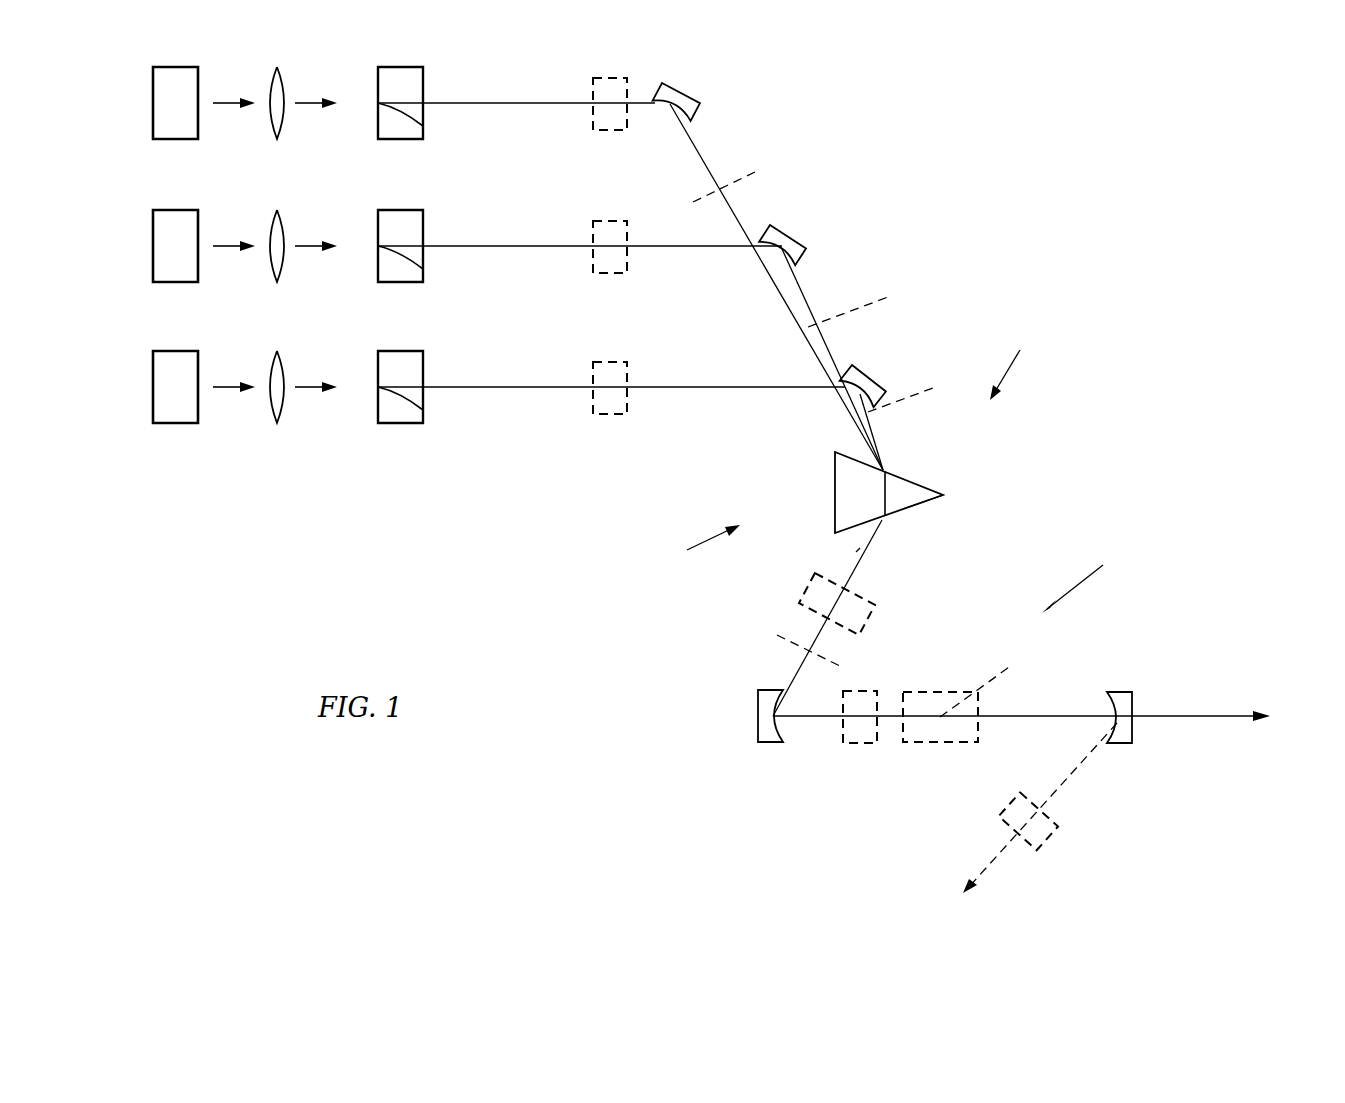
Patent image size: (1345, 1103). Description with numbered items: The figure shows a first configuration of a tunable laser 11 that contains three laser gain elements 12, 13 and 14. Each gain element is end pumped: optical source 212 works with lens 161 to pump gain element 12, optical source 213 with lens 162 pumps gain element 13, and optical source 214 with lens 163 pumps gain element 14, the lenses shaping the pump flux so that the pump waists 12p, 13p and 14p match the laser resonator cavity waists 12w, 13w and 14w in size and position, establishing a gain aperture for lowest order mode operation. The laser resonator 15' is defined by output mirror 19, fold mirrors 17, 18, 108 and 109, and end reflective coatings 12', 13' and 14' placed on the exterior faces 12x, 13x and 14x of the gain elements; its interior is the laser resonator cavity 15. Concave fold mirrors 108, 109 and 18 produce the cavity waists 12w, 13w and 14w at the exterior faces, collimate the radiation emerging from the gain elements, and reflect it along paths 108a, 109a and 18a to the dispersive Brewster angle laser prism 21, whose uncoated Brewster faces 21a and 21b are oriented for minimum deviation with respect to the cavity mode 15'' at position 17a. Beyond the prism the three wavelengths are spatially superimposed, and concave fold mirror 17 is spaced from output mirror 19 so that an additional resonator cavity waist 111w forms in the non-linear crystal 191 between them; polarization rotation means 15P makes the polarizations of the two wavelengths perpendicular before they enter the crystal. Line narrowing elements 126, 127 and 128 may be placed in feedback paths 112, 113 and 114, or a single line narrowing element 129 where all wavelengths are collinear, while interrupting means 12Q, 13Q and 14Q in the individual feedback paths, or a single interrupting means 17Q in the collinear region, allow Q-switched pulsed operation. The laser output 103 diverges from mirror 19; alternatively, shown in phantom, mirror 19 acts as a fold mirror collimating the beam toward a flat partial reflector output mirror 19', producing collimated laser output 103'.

The optical source 212 is at (177, 67).
The optical source 213 is at (177, 210).
The optical source 214 is at (177, 351).
The lens 161 is at (278, 67).
The lens 162 is at (278, 210).
The lens 163 is at (278, 351).
The laser gain element 12 is at (400, 83).
The laser gain element 13 is at (400, 226).
The laser gain element 14 is at (400, 367).
The laser resonator cavity waist 12w is at (378, 98).
The laser resonator cavity waist 13w is at (378, 241).
The laser resonator cavity waist 14w is at (378, 382).
The exterior face 12x is at (378, 93).
The exterior face 13x is at (378, 236).
The exterior face 14x is at (378, 377).
The end reflective coating 12' is at (349, 130).
The end reflective coating 13' is at (349, 273).
The end reflective coating 14' is at (349, 414).
The pump waist 12p is at (423, 126).
The pump waist 13p is at (423, 269).
The pump waist 14p is at (423, 410).
The feedback path 112 is at (527, 103).
The feedback path 113 is at (527, 246).
The feedback path 114 is at (527, 387).
The interrupting means 12Q is at (605, 131).
The interrupting means 13Q is at (605, 274).
The interrupting means 14Q is at (605, 415).
The concave fold mirror 108 is at (672, 86).
The concave fold mirror 109 is at (780, 228).
The concave fold mirror 18 is at (858, 368).
The path 108a is at (707, 150).
The path 109a is at (805, 290).
The path 18a is at (870, 430).
The line narrowing element 126 is at (747, 176).
The line narrowing element 127 is at (872, 303).
The line narrowing element 128 is at (920, 392).
The line narrowing element 129 is at (829, 657).
The laser resonator 15' is at (1020, 364).
The laser resonator cavity mode 15'' is at (793, 567).
The laser resonator cavity 15 is at (1086, 578).
The tunable laser 11 is at (697, 545).
The dispersive Brewster angle laser prism 21 is at (892, 508).
The Brewster face 21a is at (903, 473).
The Brewster face 21b is at (930, 500).
The position 17a is at (890, 522).
The interrupting means 17Q is at (865, 627).
The concave fold mirror 17 is at (757, 716).
The polarization rotation means 15P is at (867, 743).
The non-linear crystal 191 is at (930, 743).
The resonator cavity waist 111w is at (1003, 683).
The output mirror 19 is at (1122, 696).
The output mirror 19' is at (1050, 825).
The laser output 103 is at (1043, 718).
The laser output 103' is at (1028, 821).